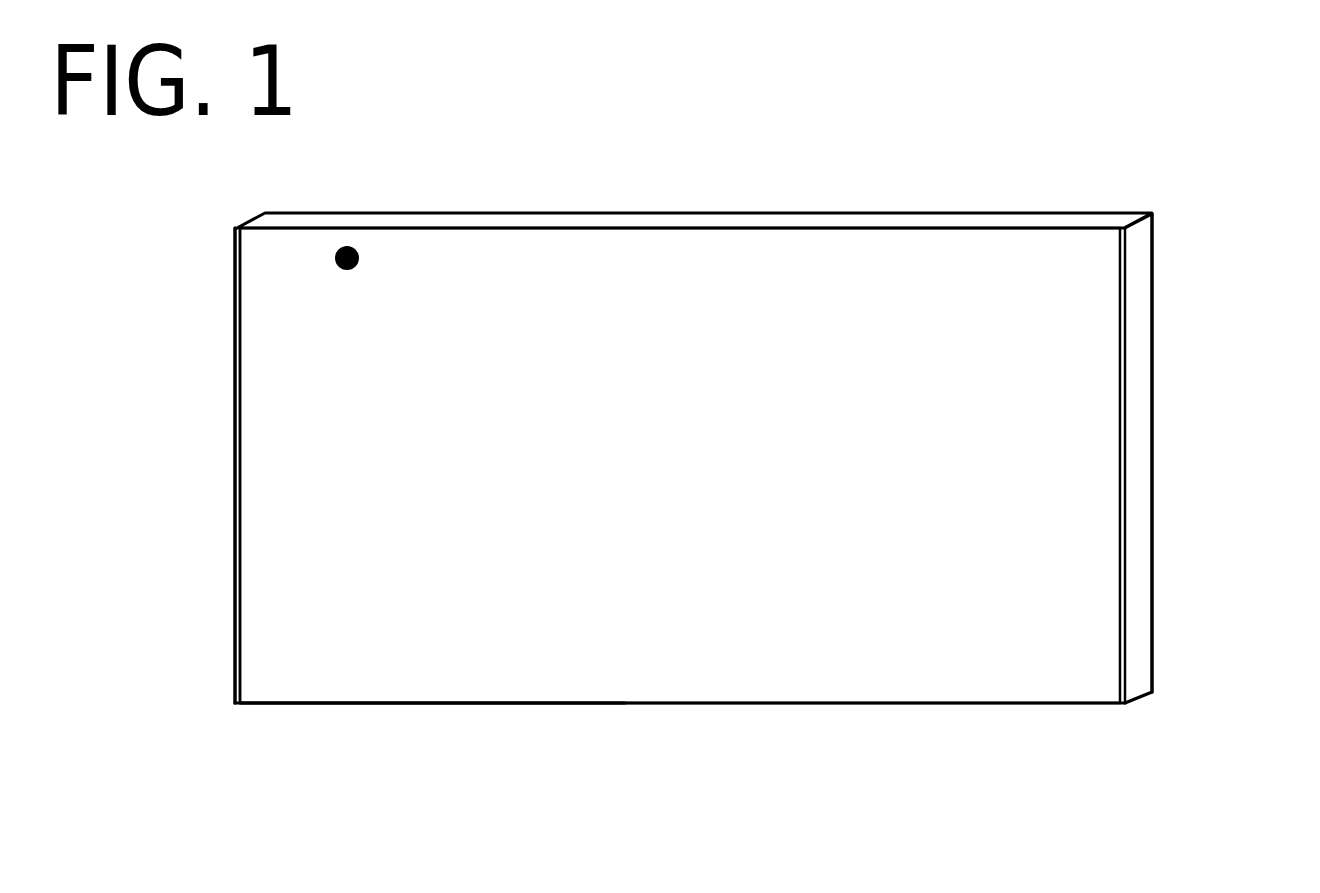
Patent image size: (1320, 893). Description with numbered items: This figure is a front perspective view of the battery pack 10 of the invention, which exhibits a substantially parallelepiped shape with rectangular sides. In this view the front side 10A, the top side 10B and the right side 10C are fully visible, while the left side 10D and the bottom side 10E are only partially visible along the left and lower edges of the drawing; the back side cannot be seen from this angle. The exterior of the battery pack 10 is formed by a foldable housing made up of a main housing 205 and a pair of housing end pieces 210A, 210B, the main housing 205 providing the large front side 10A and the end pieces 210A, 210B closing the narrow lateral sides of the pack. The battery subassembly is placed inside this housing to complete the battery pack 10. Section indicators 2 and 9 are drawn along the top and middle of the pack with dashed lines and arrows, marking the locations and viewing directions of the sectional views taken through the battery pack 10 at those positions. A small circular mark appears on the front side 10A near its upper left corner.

The battery pack 10 is at (1197, 113).
The front side 10A is at (1058, 432).
The top side 10B is at (591, 223).
The right side 10C is at (1138, 528).
The left side 10D is at (235, 472).
The bottom side 10E is at (625, 663).
The main housing 205 is at (342, 670).
The housing end piece 210A is at (235, 570).
The housing end piece 210B is at (1138, 615).
The section line 2- 2 is at (237, 223).
The section line 9- 9 is at (133, 378).